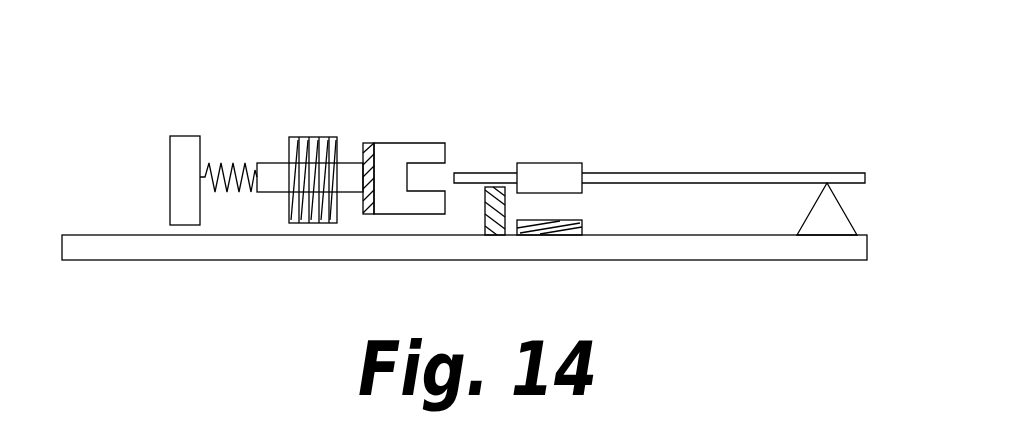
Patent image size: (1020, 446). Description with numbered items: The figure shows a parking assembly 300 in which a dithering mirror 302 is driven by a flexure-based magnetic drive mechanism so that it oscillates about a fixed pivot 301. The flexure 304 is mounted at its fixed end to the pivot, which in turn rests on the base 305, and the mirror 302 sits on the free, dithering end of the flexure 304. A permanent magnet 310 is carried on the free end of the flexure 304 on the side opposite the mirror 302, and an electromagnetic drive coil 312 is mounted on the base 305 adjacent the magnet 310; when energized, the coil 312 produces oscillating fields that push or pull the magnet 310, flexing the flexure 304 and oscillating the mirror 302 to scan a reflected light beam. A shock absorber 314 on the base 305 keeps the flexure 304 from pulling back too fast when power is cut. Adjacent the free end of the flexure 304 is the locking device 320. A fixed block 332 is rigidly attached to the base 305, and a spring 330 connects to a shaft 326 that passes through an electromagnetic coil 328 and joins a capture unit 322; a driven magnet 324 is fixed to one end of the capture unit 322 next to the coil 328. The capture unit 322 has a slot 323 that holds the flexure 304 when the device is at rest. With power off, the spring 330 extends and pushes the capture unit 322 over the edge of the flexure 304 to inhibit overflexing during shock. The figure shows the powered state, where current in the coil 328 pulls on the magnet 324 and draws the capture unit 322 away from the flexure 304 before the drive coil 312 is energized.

The parking assembly 300 is at (723, 53).
The fixed pivot 301 is at (813, 202).
The dithering mirror 302 is at (565, 163).
The flexure 304 is at (793, 173).
The base 305 is at (828, 260).
The permanent magnet 310 is at (572, 194).
The electromagnetic drive coil 312 is at (573, 221).
The shock absorber 314 is at (483, 227).
The locking device 320 is at (351, 125).
The capture unit 322 is at (423, 143).
The slot 323 is at (447, 167).
The driven magnet 324 is at (367, 143).
The shaft 326 is at (275, 170).
The electromagnetic coil 328 is at (337, 206).
The spring 330 is at (223, 172).
The fixed block 332 is at (182, 176).